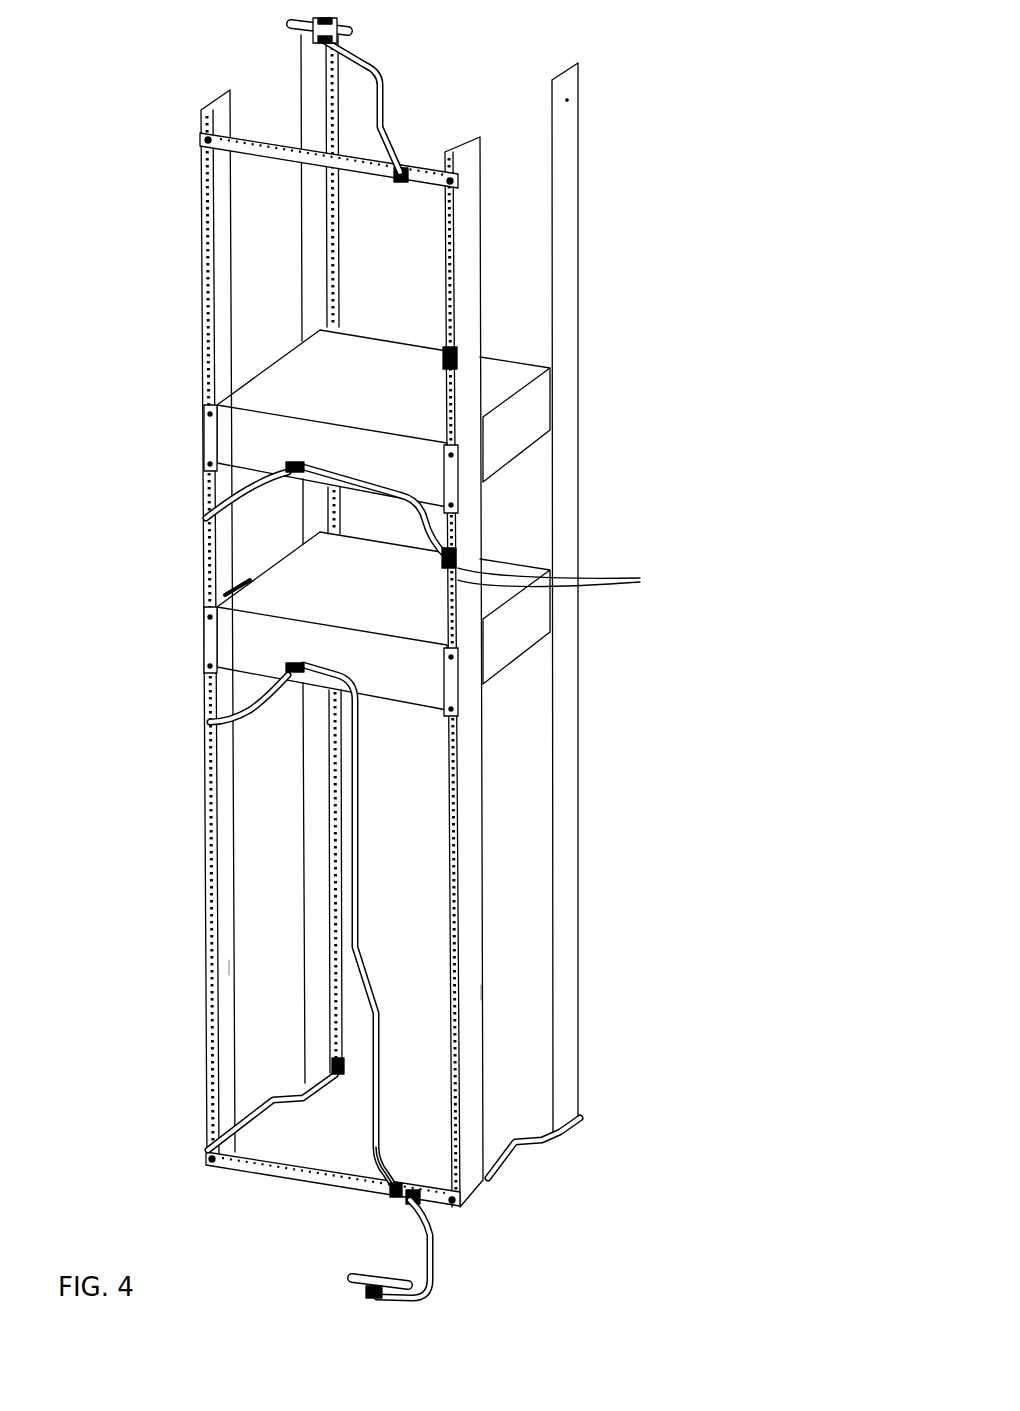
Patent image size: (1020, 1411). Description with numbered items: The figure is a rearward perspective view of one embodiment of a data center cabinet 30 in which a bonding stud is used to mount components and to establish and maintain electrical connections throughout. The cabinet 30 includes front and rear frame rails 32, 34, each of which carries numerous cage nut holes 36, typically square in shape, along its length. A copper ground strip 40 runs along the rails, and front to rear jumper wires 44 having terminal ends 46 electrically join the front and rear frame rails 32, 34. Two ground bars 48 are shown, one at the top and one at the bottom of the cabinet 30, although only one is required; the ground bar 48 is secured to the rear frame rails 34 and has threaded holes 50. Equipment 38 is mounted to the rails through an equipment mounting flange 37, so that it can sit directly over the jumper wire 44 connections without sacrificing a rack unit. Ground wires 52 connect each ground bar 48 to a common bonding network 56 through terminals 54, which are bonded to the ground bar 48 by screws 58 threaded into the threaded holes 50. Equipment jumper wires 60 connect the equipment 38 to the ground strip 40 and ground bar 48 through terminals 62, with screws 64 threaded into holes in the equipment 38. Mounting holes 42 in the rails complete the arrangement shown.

The data center cabinet 30 is at (250, 30).
The front frame rail 32 is at (310, 72).
The rear frame rail 34 is at (228, 835).
The cage nut hole 36 is at (333, 257).
The equipment mounting flange 37 is at (205, 640).
The equipment 38 is at (528, 410).
The copper ground strip 40 is at (210, 968).
The mounting holes 42 is at (205, 1052).
The front to rear jumper wire 44 is at (265, 1113).
The terminal end 46 is at (340, 1070).
The ground bar 48 is at (228, 143).
The threaded hole 50 is at (247, 153).
The ground wire 52 is at (367, 63).
The terminal 54 is at (402, 172).
The common bonding network 56 is at (347, 32).
The screw 58 is at (415, 1187).
The equipment jumper wire 60 is at (337, 467).
The terminal 62 is at (225, 595).
The screw 64 is at (206, 518).